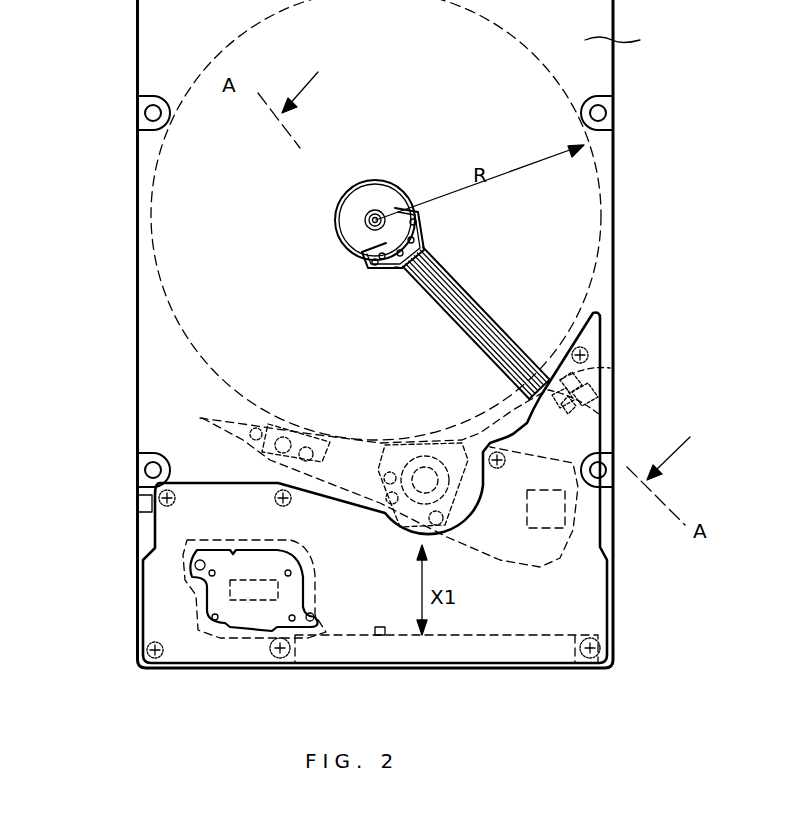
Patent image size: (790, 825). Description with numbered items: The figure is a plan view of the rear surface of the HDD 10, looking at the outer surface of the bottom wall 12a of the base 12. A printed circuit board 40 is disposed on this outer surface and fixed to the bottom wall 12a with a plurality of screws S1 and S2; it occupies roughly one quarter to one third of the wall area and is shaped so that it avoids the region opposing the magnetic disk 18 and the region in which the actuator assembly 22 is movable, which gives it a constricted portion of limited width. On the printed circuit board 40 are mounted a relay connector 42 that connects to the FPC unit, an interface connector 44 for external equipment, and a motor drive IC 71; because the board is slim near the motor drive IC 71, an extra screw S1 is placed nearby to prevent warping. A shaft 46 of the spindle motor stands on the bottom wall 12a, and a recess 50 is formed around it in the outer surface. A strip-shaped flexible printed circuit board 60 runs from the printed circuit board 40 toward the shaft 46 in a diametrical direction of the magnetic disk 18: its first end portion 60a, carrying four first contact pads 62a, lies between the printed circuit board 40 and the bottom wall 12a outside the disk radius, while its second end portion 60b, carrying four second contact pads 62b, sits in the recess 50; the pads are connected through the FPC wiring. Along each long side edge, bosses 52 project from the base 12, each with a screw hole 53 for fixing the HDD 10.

The disk drive device 10 is at (112, 256).
The base 12 is at (136, 325).
The bottom wall 12a is at (636, 40).
The magnetic disk 18 is at (600, 230).
The actuator assembly 22 is at (297, 432).
The printed circuit board 40 is at (588, 570).
The relay connector 42 is at (245, 600).
The interface connector 44 is at (452, 655).
The shaft 46 is at (375, 215).
The recess 50 is at (368, 258).
The boss 52 is at (145, 96).
The screw hole 53 is at (153, 113).
The flexible printed circuit board 60 is at (480, 333).
The first end portion 60a is at (600, 415).
The second end portion 60b is at (397, 268).
The first contact pads 62a is at (585, 380).
The second contact pads 62b is at (415, 236).
The motor drive IC 71 is at (565, 515).
The screw S1 is at (160, 498).
The screw S2 is at (282, 658).